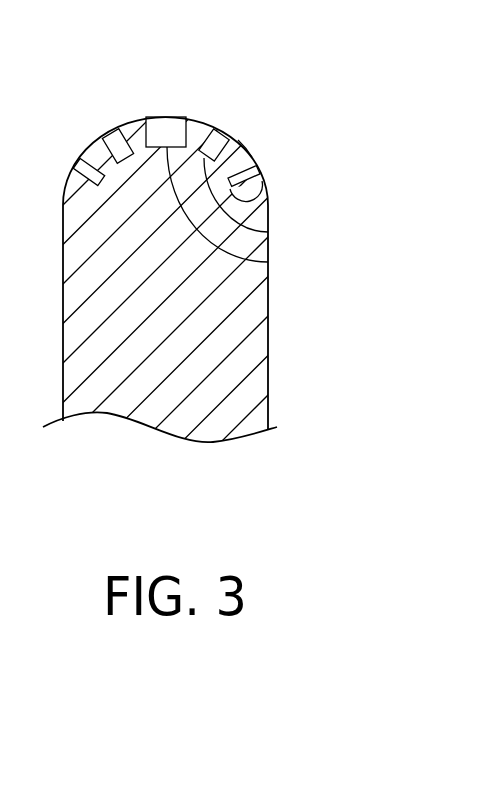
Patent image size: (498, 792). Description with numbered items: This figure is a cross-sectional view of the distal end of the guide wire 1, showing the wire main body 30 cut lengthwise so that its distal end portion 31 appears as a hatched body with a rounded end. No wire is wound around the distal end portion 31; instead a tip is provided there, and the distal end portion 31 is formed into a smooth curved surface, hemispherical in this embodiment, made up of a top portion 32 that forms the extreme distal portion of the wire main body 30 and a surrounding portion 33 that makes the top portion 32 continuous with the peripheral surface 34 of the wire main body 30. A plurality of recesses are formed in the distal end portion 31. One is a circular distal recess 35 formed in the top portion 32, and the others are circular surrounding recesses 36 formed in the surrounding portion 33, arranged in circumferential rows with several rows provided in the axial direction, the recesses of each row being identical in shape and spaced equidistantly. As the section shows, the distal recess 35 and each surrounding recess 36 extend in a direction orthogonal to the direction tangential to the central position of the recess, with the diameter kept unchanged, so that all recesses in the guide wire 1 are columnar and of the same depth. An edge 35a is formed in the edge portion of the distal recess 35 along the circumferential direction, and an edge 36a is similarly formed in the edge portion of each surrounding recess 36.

The guide wire 1 is at (269, 382).
The wire main body 30 is at (269, 337).
The distal end portion 31 is at (202, 117).
The top portion 32 is at (167, 116).
The surrounding portion 33 is at (246, 150).
The peripheral surface 34 is at (269, 296).
The distal recess 35 is at (269, 262).
The edge 35a is at (147, 116).
The surrounding recess 36 is at (255, 204).
The edge 36a is at (214, 128).